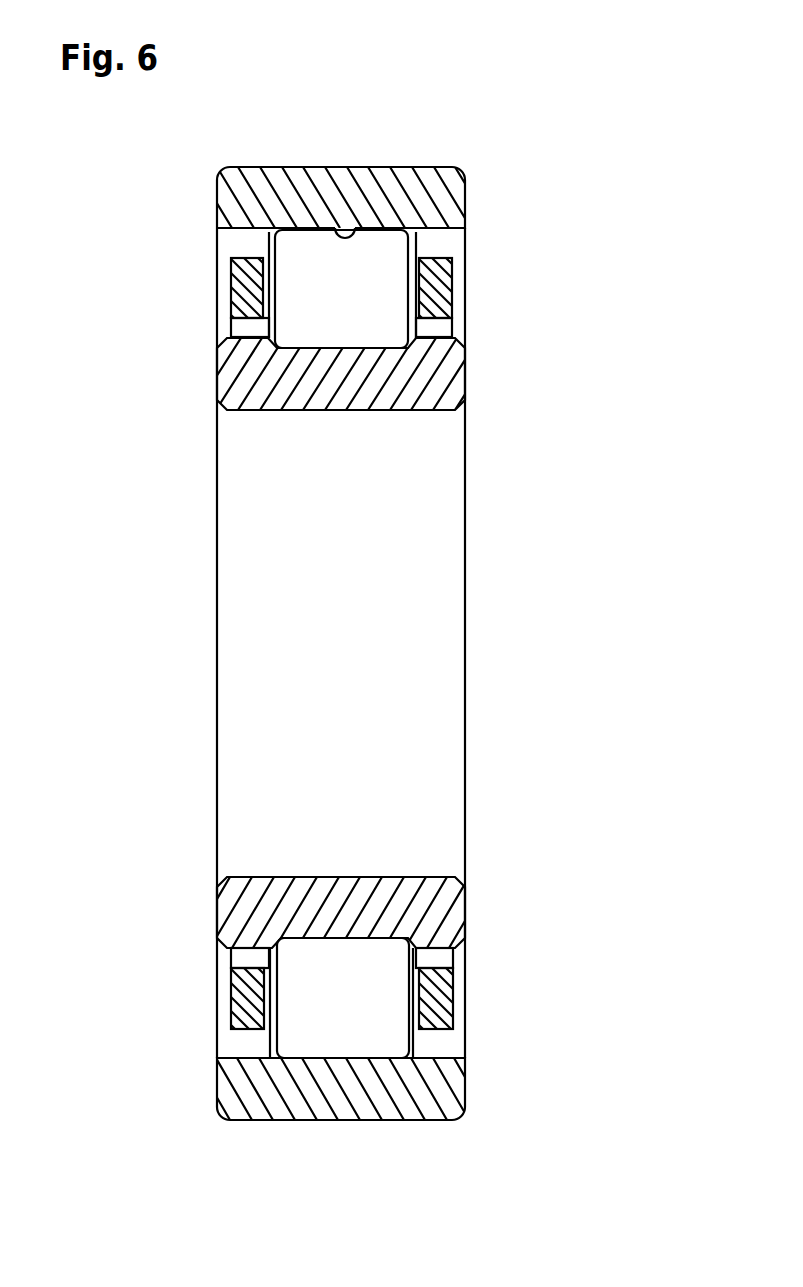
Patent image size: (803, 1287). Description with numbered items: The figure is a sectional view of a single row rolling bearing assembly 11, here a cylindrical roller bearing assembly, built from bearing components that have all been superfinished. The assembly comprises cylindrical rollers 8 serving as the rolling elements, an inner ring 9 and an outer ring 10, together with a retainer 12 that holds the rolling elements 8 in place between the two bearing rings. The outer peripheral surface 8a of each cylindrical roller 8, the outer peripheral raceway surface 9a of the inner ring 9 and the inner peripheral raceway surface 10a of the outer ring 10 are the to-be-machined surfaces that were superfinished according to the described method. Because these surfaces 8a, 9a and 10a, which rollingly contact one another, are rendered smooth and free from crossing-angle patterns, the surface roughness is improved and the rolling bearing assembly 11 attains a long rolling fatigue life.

The cylindrical roller 8 is at (395, 250).
The outer peripheral surface of cylindrical roller 8a is at (315, 348).
The inner ring 9 is at (422, 410).
The outer peripheral surface (raceway surface) of inner ring 9a is at (332, 348).
The outer ring 10 is at (376, 176).
The inner peripheral surface (raceway surface) of outer ring 10a is at (340, 229).
The rolling bearing assembly 11 is at (534, 271).
The retainer 12 is at (447, 1003).